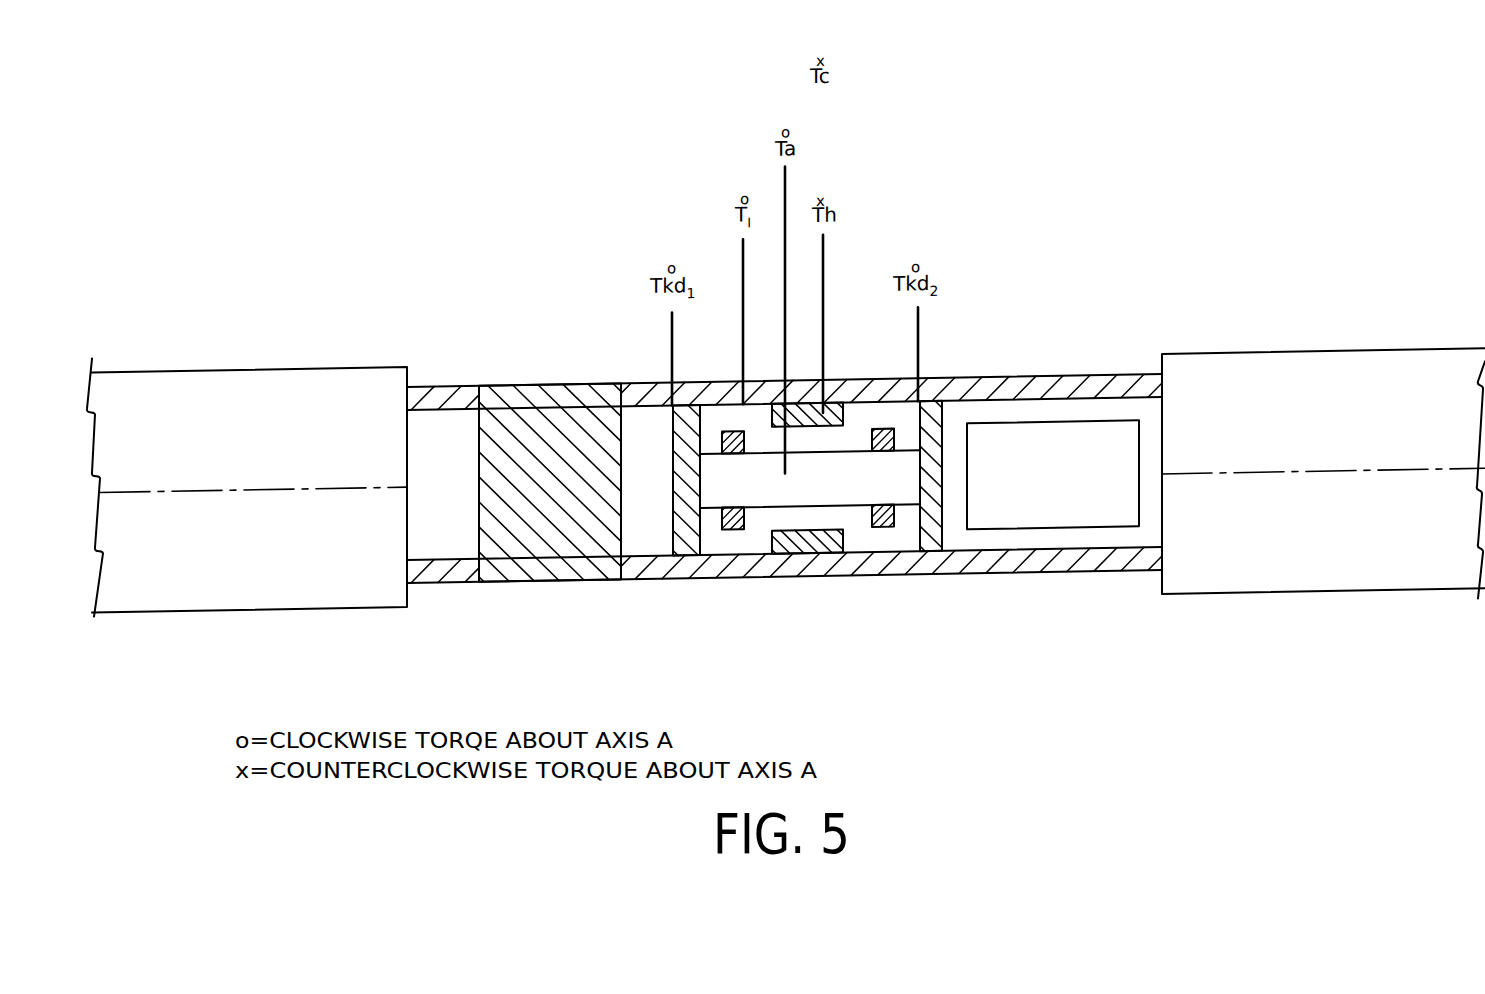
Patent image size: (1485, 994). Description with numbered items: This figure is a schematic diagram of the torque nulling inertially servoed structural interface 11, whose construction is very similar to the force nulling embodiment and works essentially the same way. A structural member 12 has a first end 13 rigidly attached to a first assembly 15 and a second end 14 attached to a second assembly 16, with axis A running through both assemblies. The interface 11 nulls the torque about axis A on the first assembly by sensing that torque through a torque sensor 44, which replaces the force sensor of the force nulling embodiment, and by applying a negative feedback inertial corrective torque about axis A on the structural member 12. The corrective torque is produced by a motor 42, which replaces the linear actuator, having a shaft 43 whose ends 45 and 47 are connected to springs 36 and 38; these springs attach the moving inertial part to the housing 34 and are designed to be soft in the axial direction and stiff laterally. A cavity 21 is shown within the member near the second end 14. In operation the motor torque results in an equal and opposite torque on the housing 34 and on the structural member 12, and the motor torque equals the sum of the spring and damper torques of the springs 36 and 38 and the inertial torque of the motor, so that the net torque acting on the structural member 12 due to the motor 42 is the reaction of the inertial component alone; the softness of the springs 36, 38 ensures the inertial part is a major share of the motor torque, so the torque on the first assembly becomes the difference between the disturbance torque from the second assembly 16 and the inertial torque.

The torque nulling inertially servoed structural interface 11 is at (822, 430).
The structural member 12 is at (1077, 579).
The first end 13 is at (408, 378).
The second end 14 is at (1158, 381).
The first assembly 15 is at (252, 602).
The second assembly 16 is at (1327, 601).
The cavity 21 is at (1042, 443).
The housing 34 is at (815, 549).
The spring 36 is at (688, 547).
The spring 38 is at (933, 547).
The motor 42 is at (850, 496).
The shaft 43 is at (747, 510).
The torque sensor 44 is at (545, 565).
The shaft end 45 is at (700, 455).
The shaft end 47 is at (918, 456).